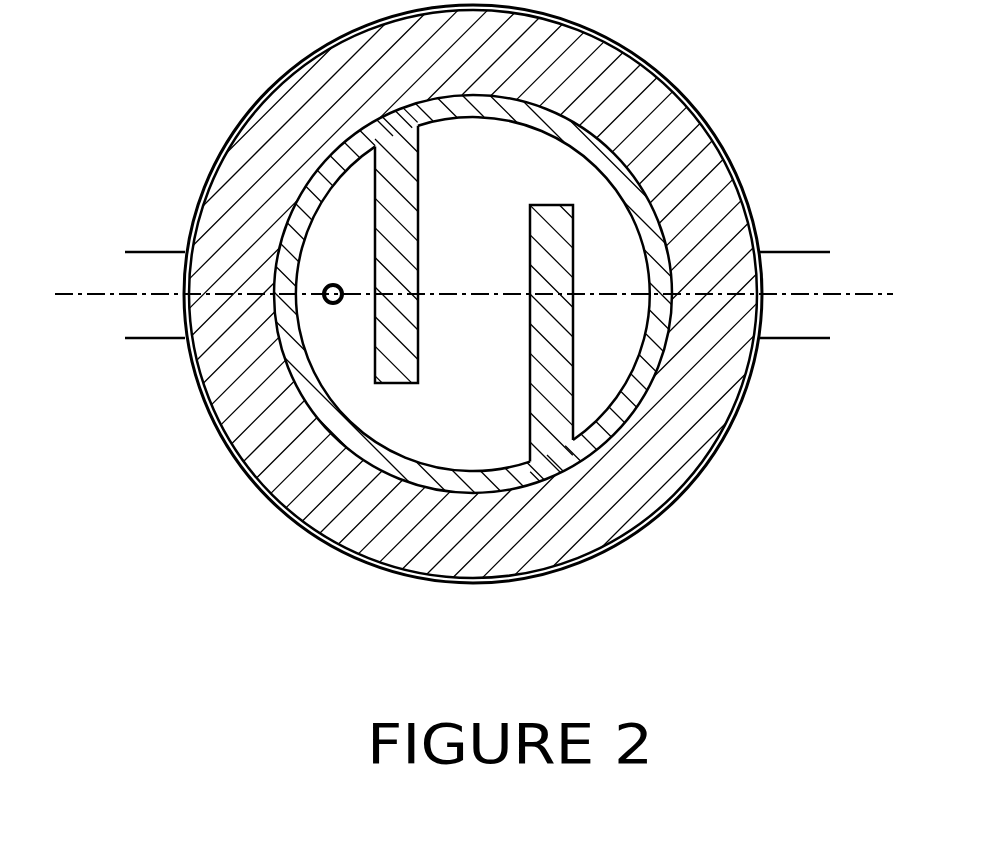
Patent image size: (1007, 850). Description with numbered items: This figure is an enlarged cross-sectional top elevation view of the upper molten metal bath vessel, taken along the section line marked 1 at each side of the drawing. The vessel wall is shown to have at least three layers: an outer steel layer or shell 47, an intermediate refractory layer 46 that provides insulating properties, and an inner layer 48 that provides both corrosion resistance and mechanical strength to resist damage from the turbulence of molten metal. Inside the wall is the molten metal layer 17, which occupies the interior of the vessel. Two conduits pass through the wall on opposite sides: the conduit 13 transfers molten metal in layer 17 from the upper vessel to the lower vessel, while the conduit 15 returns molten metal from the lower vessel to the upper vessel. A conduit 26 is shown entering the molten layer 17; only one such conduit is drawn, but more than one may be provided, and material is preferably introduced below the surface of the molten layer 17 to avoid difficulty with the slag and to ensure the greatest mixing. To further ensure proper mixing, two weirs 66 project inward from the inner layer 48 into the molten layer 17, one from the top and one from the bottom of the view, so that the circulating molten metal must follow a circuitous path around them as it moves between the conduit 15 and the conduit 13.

The section line 1- 1 is at (473, 293).
The conduit 13 is at (793, 343).
The conduit 15 is at (154, 343).
The molten metal layer 17 is at (478, 387).
The conduit 26 is at (325, 288).
The intermediate refractory layer 46 is at (409, 525).
The outer steel layer or shell 47 is at (354, 556).
The inner layer 48 is at (467, 482).
The weirs 66 is at (420, 215).